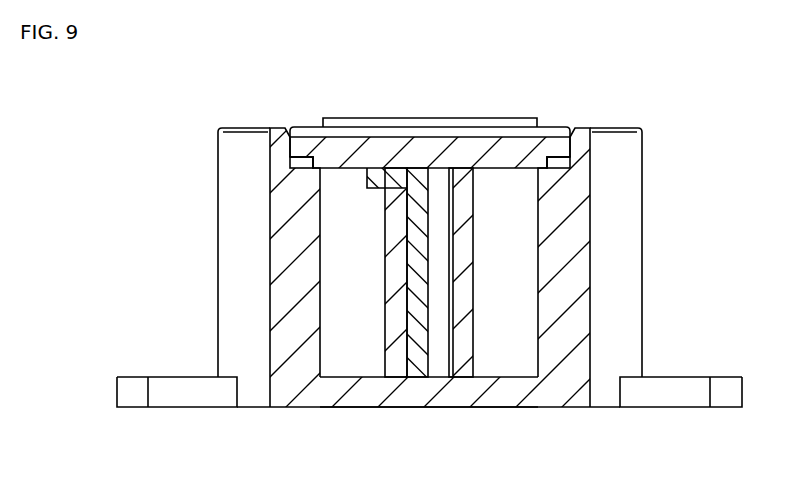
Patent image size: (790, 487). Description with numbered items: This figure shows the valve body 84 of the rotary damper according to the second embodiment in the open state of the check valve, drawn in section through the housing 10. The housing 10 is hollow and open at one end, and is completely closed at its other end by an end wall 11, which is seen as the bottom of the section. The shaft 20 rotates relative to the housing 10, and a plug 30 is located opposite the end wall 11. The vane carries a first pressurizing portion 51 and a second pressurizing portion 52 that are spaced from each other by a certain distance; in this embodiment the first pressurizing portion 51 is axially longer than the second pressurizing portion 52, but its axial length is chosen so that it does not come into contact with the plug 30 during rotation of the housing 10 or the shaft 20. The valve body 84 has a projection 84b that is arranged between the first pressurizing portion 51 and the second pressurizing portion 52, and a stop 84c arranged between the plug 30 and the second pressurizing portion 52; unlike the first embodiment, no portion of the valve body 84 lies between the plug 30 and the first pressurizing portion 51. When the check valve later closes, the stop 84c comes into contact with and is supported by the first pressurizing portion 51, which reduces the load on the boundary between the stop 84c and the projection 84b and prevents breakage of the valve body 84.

The housing 10 is at (226, 203).
The end wall 11 is at (365, 396).
The shaft 20 is at (343, 123).
The plug 30 is at (433, 142).
The first pressurizing portion 51 is at (467, 288).
The second pressurizing portion 52 is at (395, 288).
The valve body 84 is at (392, 261).
The projection 84b is at (422, 221).
The stop 84c is at (400, 177).